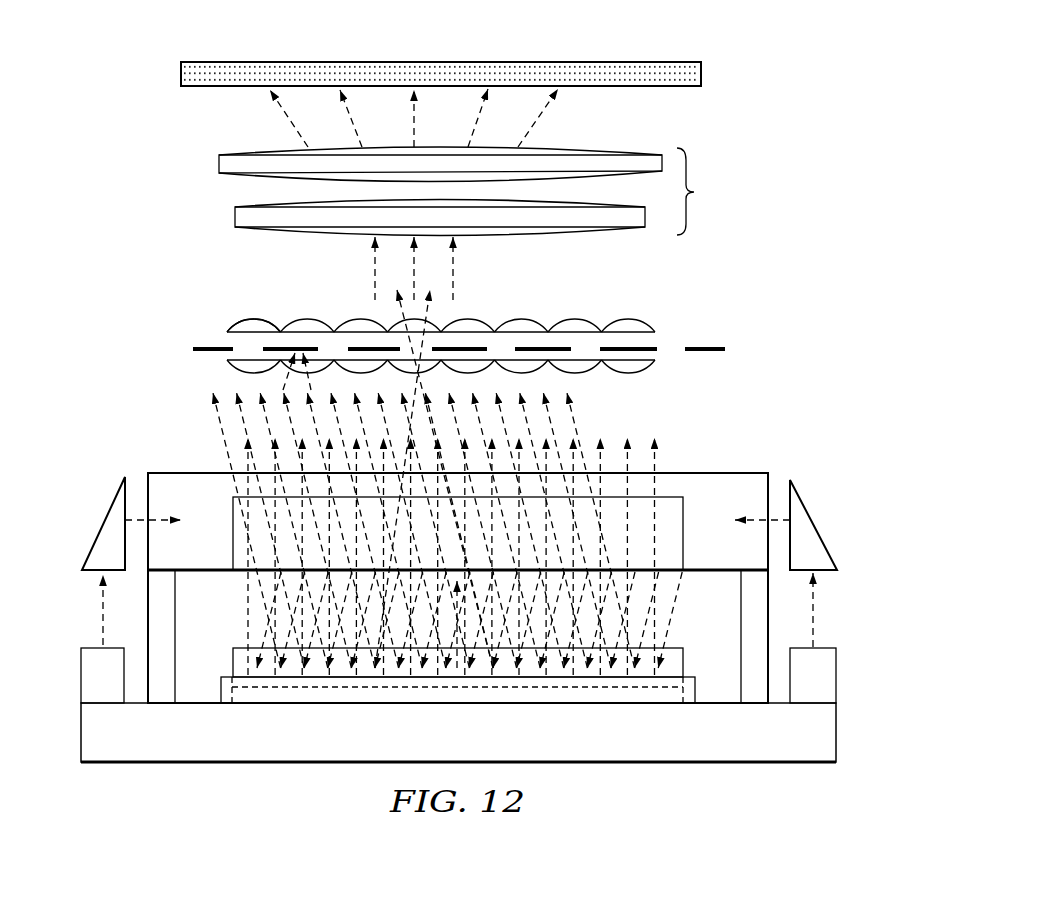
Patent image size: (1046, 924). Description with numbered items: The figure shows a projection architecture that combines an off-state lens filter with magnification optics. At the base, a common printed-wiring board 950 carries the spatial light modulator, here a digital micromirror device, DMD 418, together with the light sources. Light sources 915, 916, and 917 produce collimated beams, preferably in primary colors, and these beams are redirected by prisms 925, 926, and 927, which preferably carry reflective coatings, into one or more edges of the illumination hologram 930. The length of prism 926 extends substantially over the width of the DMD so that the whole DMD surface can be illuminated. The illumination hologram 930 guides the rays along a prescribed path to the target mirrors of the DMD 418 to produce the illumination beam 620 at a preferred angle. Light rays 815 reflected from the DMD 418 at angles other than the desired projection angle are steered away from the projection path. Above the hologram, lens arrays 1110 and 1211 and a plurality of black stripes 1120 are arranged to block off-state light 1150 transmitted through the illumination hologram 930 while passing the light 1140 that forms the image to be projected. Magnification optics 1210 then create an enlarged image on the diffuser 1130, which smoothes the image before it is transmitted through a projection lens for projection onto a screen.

The diffuser 1130 is at (608, 62).
The magnification optics 1210 is at (483, 162).
The lens array 1211 is at (237, 322).
The off-state light 1150 is at (298, 343).
The light forming the image 1140 is at (428, 305).
The black stripes 1120 is at (705, 348).
The lens array 1110 is at (230, 372).
The light rays reflected from the DMD 815 is at (220, 425).
The illumination hologram 930 is at (759, 473).
The prism 925 is at (92, 537).
The prism 927 is at (823, 538).
The prism 926 is at (233, 533).
The light source 916 is at (232, 660).
The illumination beam 620 is at (672, 595).
The light source 915 is at (81, 678).
The light source 917 is at (836, 680).
The DMD 418 is at (697, 693).
The printed-wiring board 950 is at (652, 762).